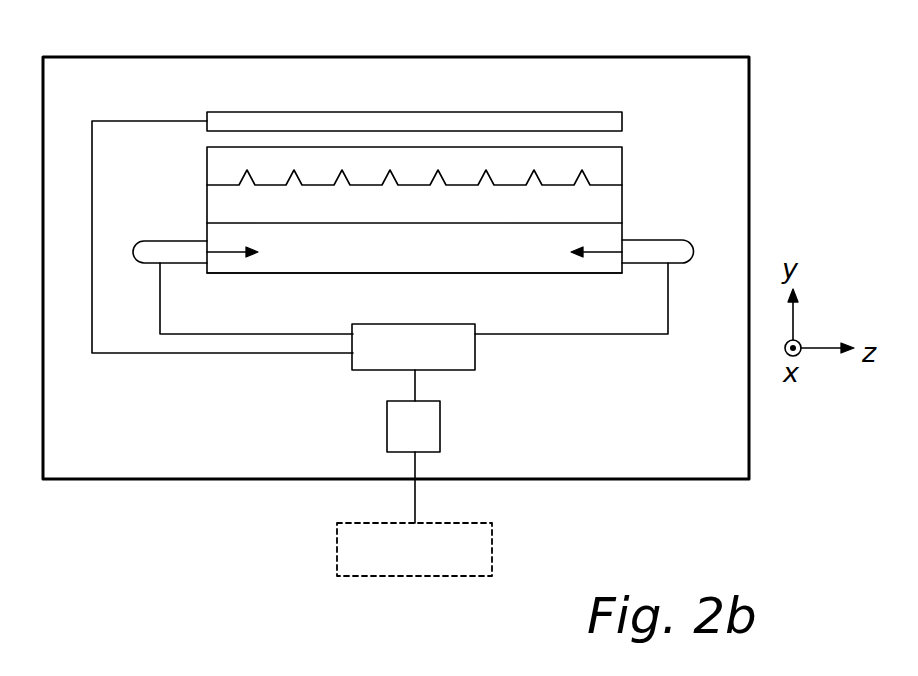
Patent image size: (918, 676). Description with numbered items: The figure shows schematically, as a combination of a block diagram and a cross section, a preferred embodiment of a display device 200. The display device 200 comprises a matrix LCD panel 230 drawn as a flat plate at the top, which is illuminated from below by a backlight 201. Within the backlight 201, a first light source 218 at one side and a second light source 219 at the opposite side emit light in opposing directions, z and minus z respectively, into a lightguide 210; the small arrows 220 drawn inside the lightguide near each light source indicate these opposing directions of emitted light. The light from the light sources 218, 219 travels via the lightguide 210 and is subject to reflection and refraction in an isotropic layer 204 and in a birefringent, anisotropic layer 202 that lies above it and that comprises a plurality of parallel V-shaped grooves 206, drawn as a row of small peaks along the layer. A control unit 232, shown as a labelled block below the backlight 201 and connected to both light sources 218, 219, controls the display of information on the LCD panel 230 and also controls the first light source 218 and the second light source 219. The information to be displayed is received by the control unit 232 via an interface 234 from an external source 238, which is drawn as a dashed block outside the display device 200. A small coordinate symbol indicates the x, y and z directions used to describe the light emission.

The display device 200 is at (749, 78).
The backlight 201 is at (178, 188).
The birefringent layer 202 is at (622, 158).
The isotropic layer 204 is at (623, 203).
The V-shaped grooves 206 is at (249, 170).
The lightguide 210 is at (640, 223).
The first light source 218 is at (148, 240).
The second light source 219 is at (687, 263).
The flow direction arrows 220 is at (232, 250).
The matrix LCD panel 230 is at (622, 120).
The control unit 232 is at (475, 357).
The interface 234 is at (440, 428).
The external source 238 is at (492, 550).